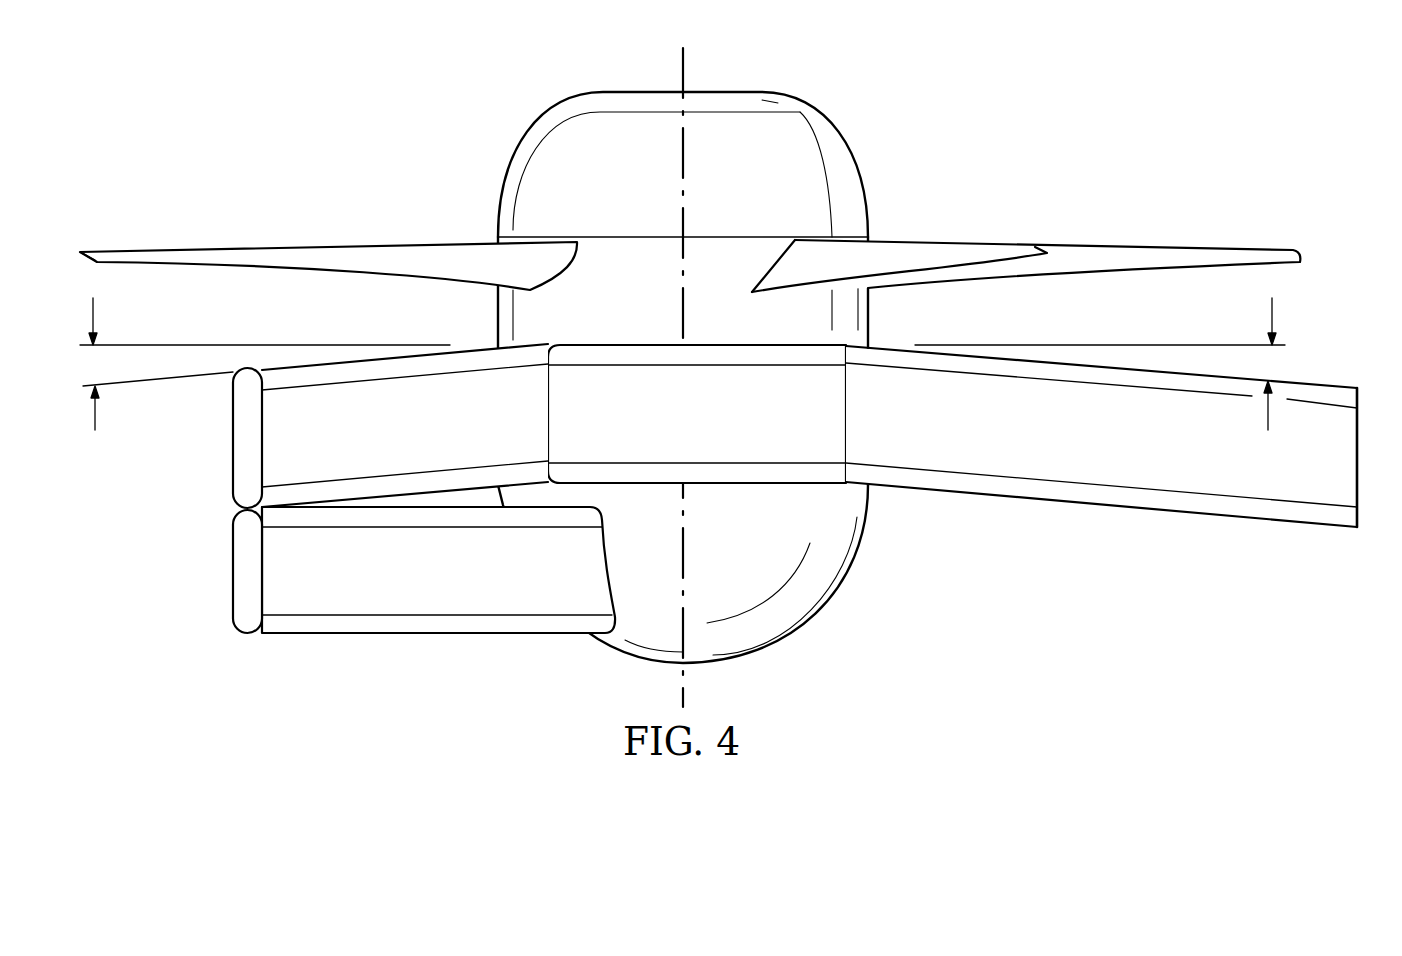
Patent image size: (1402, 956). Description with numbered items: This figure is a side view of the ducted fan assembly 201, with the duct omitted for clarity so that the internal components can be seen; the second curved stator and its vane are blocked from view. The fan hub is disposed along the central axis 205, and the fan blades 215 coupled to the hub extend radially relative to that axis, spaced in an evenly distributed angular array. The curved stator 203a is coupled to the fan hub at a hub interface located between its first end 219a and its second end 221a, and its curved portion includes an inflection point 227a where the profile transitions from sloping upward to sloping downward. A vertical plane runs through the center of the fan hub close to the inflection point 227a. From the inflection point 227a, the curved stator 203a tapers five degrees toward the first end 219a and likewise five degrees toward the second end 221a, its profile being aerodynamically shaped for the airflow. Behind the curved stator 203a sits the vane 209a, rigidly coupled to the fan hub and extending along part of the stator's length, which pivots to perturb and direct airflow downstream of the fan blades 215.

The ducted fan assembly 201 is at (737, 372).
The central axis 205 is at (681, 65).
The fan blades 215 is at (362, 250).
The first end 219a is at (260, 370).
The inflection point 227a is at (662, 380).
The curved stator 203a is at (1113, 368).
The second end 221a is at (1347, 387).
The vane 209a is at (418, 634).